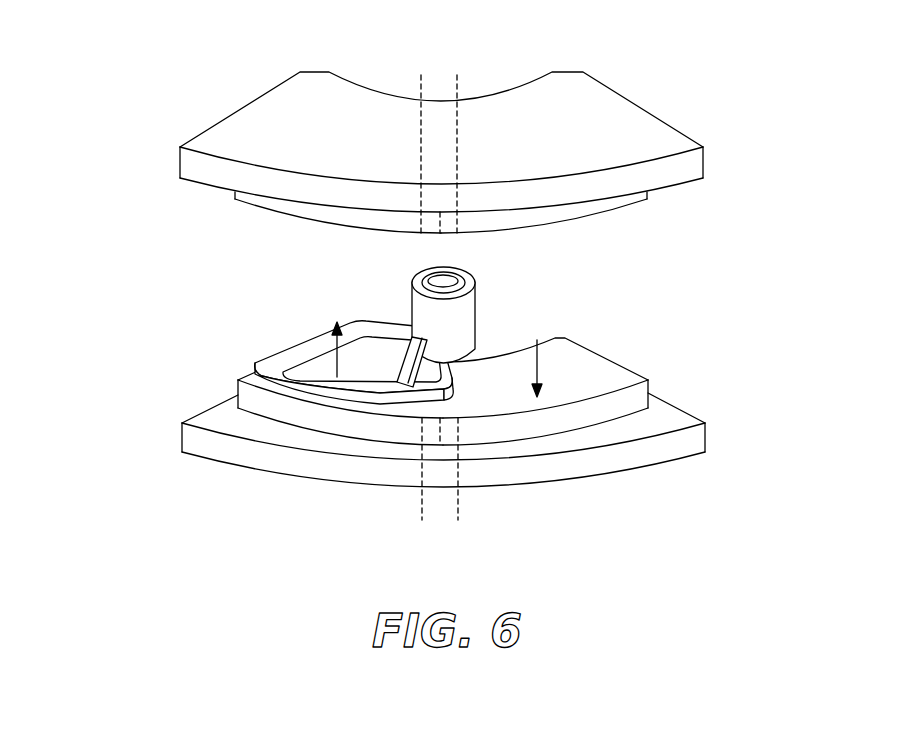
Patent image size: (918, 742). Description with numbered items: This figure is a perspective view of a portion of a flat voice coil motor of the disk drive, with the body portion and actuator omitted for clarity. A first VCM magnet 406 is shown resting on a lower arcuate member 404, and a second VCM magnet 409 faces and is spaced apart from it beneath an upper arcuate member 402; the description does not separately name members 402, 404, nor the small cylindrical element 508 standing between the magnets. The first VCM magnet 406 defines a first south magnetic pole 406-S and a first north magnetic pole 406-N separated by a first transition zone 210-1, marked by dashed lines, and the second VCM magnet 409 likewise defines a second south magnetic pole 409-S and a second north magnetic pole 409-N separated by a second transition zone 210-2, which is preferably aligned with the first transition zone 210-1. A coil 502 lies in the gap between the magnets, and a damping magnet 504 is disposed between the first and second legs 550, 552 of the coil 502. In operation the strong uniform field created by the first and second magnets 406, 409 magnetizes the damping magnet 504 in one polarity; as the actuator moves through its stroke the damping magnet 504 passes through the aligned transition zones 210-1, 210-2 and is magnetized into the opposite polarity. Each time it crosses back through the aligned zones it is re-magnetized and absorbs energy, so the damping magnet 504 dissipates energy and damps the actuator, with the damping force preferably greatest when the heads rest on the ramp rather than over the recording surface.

The upper plate 402 is at (615, 112).
The lower plate 404 is at (673, 413).
The first VCM magnet 406 is at (428, 409).
The first north magnetic pole 406-N is at (583, 422).
The first south magnetic pole 406-S is at (315, 418).
The second VCM magnet 409 is at (436, 209).
The second north magnetic pole 409-N is at (295, 210).
The second south magnetic pole 409-S is at (620, 205).
The coil 502 is at (360, 392).
The damping magnet 504 is at (408, 365).
The pivot bearing 508 is at (472, 317).
The first leg 550 is at (381, 416).
The second leg 552 is at (452, 380).
The first transition zone 210-1 is at (458, 519).
The second transition zone 210-2 is at (457, 76).